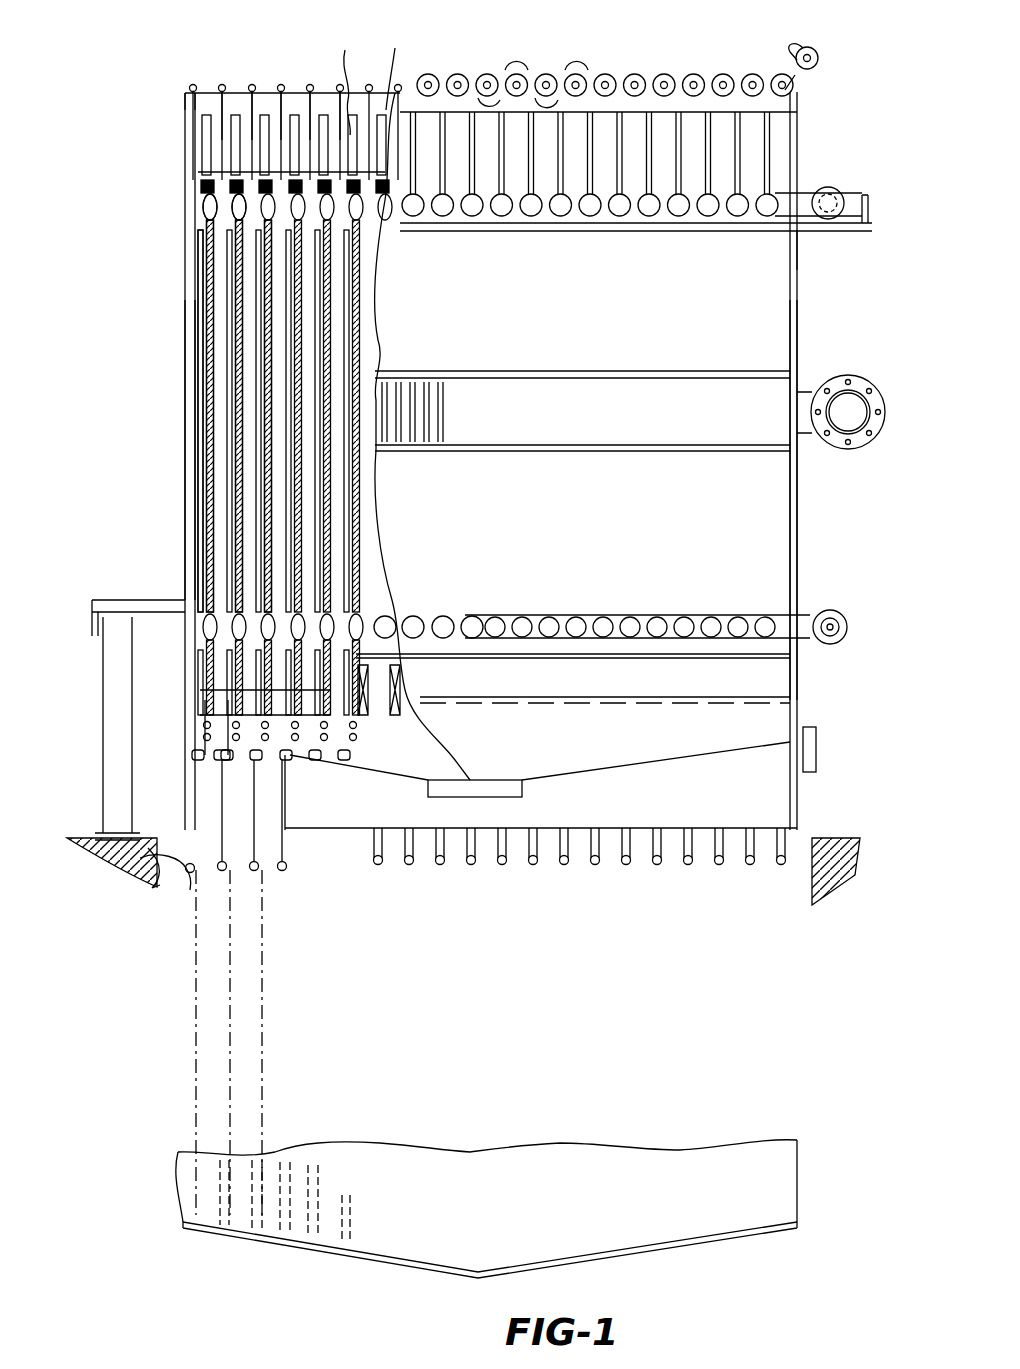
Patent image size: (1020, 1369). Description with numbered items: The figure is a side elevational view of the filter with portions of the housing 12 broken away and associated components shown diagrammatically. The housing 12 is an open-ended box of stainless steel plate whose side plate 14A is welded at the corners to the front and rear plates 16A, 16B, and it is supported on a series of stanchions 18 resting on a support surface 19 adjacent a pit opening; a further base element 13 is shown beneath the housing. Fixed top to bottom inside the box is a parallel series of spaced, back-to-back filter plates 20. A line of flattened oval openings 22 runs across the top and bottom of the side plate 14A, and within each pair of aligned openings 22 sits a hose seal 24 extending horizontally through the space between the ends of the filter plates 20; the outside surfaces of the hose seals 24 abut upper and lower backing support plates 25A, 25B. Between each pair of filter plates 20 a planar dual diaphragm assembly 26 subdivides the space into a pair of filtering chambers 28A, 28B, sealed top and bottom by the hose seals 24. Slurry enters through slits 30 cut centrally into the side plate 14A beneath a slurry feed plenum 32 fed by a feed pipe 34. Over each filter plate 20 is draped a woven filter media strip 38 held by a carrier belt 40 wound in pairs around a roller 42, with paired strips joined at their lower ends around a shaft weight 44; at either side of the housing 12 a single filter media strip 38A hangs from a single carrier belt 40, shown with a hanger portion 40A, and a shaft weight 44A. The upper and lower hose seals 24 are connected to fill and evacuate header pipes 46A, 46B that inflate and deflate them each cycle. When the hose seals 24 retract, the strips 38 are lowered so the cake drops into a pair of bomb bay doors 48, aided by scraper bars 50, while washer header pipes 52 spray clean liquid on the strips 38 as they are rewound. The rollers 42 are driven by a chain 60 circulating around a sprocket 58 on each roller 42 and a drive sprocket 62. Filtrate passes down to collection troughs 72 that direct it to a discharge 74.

The housing 12 is at (797, 512).
The foundation 13 is at (818, 838).
The side plate 14A is at (636, 218).
The front plate 16A is at (797, 546).
The rear plate 16B is at (185, 452).
The stanchion 18 is at (103, 760).
The support surface 19 is at (85, 837).
The filter plate 20 is at (200, 195).
The flattened oval opening 22 is at (200, 208).
The hose seal 24 is at (205, 225).
The upper backing support plate 25A is at (379, 74).
The lower backing support plate 25B is at (208, 720).
The dual diaphragm assembly 26 is at (203, 330).
The filtering chamber 28A is at (203, 360).
The filtering chamber 28B is at (210, 395).
The slit 30 is at (400, 395).
The slurry feed plenum 32 is at (582, 411).
The feed pipe 34 is at (870, 358).
The filter media strip 38 is at (200, 150).
The single filter media strip 38A is at (195, 163).
The carrier belt 40 is at (200, 97).
The hanger hook 40A is at (188, 102).
The roller 42 is at (222, 90).
The shaft weight 44 is at (250, 870).
The shaft weight 44A is at (158, 862).
The fill and evacuate header pipe 46A is at (808, 232).
The fill and evacuate header pipe 46B is at (640, 612).
The bomb bay door 48 is at (320, 1252).
The scraper bar 50 is at (224, 872).
The washer header pipe 52 is at (214, 760).
The sprocket 58 is at (490, 75).
The roller chain 60 is at (620, 80).
The drive sprocket 62 is at (818, 58).
The collection trough 72 is at (198, 702).
The discharge 74 is at (522, 790).